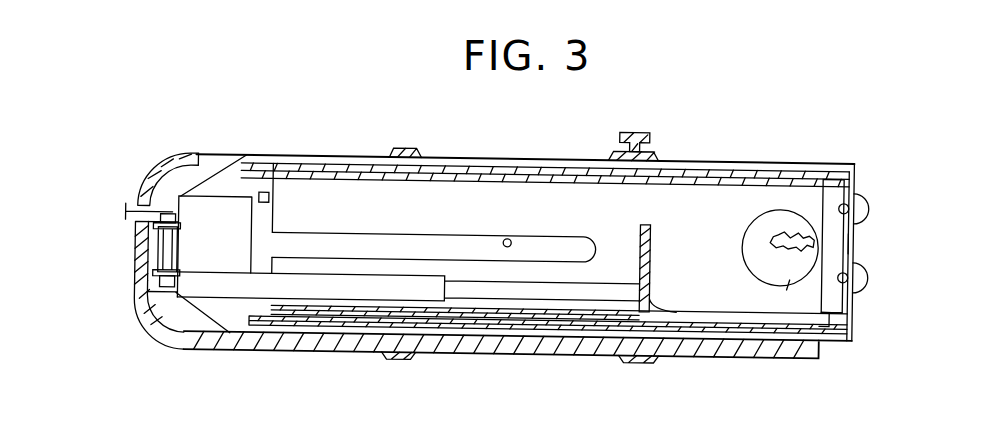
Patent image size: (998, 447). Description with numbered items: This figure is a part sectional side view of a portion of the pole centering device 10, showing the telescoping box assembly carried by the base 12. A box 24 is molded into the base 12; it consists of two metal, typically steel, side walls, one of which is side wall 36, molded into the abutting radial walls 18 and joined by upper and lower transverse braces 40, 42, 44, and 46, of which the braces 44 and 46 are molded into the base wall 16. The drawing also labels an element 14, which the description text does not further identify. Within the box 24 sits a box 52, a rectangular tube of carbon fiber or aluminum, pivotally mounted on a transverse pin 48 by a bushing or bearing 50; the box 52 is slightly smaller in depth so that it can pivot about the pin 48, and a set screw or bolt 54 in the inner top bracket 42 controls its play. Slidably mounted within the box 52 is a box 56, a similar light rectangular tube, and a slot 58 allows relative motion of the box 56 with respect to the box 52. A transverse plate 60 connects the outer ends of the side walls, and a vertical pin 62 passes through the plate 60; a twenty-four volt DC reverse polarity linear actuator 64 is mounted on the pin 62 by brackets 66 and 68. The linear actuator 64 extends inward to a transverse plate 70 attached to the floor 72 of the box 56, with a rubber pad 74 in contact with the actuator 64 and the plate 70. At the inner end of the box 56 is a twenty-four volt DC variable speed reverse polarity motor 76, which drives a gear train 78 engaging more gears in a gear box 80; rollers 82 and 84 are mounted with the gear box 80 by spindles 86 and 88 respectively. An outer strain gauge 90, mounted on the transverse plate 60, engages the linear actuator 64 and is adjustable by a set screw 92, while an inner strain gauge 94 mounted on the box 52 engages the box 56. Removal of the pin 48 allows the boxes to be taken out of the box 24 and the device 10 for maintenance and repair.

The pole centering device 10 is at (566, 366).
The base 12 is at (182, 363).
The end wall 14 is at (136, 268).
The base wall 16 is at (348, 340).
The radial walls 18 is at (170, 343).
The box 24 is at (858, 165).
The side wall 36 is at (221, 157).
The upper transverse brace 40 is at (412, 150).
The inner top bracket 42 is at (652, 150).
The lower transverse brace 44 is at (405, 357).
The lower transverse brace 46 is at (641, 360).
The transverse pin 48 is at (510, 240).
The bushing or bearing 50 is at (518, 233).
The box 52 is at (842, 340).
The set screw or bolt 54 is at (635, 134).
The box 56 is at (737, 197).
The slot 58 is at (474, 230).
The transverse plate 60 is at (158, 250).
The vertical pin 62 is at (150, 285).
The linear actuator 64 is at (232, 275).
The bracket 66 is at (153, 303).
The bracket 68 is at (182, 228).
The transverse plate 70 is at (678, 315).
The floor 72 is at (680, 317).
The rubber pad 74 is at (637, 243).
The motor 76 is at (790, 277).
The gear train 78 is at (772, 258).
The gear box 80 is at (850, 245).
The roller 82 is at (873, 208).
The roller 84 is at (873, 285).
The spindle 86 is at (863, 195).
The spindle 88 is at (863, 298).
The outer strain gauge 90 is at (150, 178).
The set screw 92 is at (125, 212).
The inner strain gauge 94 is at (266, 190).